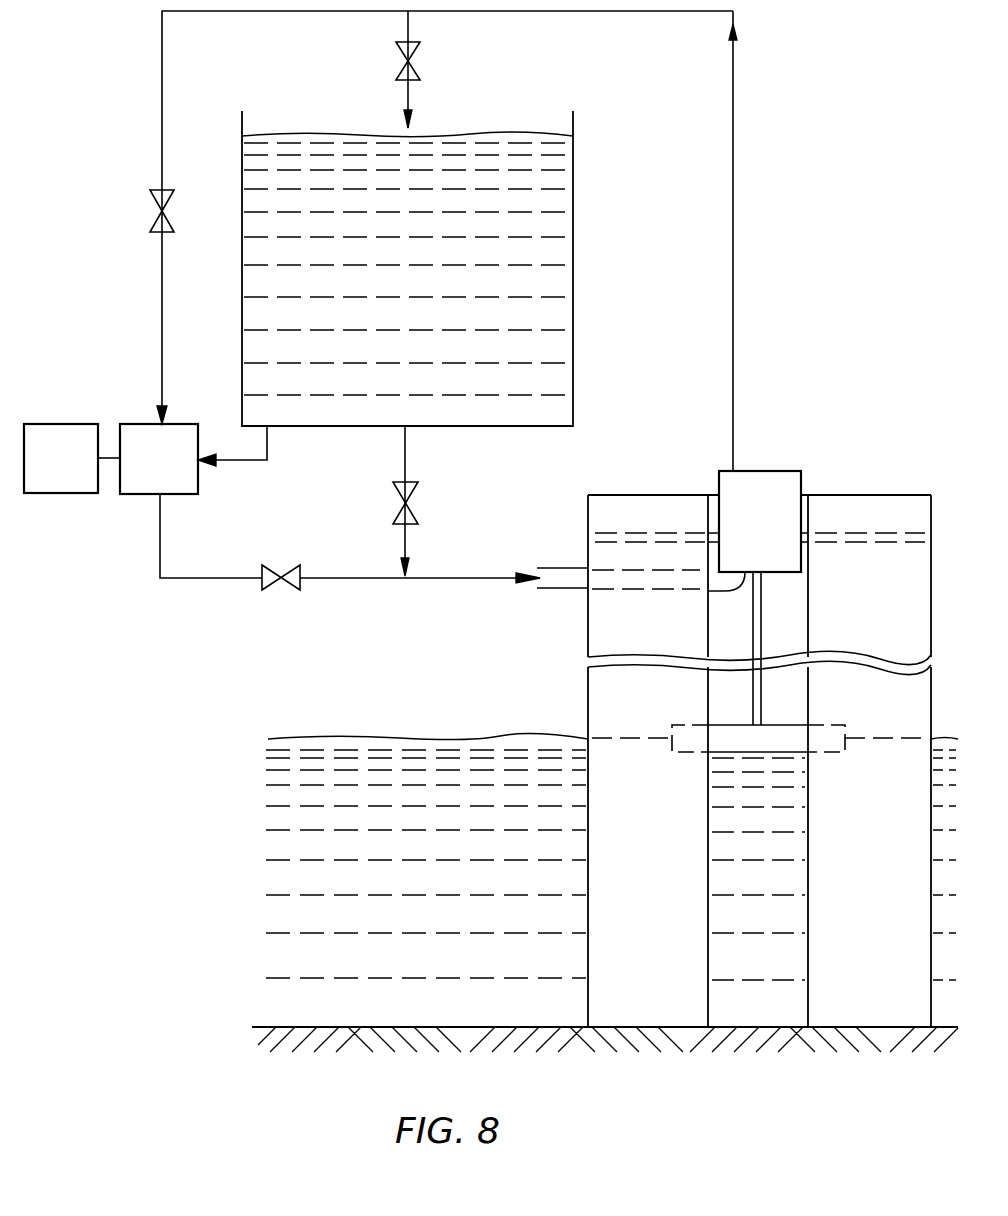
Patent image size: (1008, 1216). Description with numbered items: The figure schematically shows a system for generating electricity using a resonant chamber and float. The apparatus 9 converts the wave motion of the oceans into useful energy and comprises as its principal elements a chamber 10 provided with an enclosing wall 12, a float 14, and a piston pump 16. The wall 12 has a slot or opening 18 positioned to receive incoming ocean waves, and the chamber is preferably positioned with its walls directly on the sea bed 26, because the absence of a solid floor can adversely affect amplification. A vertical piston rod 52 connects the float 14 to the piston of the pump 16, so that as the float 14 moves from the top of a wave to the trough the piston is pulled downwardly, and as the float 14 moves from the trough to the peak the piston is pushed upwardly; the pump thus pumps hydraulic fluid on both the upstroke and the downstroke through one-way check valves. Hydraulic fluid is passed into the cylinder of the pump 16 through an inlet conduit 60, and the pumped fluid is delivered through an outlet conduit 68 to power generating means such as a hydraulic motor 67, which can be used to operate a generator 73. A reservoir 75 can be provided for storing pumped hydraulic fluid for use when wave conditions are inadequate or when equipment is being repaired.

The apparatus 9 is at (878, 462).
The chamber 10 is at (660, 1008).
The enclosing wall 12 is at (586, 682).
The float 14 is at (788, 742).
The piston pump 16 is at (754, 470).
The opening 18 is at (782, 1000).
The sea bed 26 is at (414, 1064).
The piston rod 52 is at (763, 608).
The inlet conduit 60 is at (434, 578).
The hydraulic motor 67 is at (136, 424).
The outlet conduit 68 is at (736, 193).
The generator 73 is at (69, 424).
The reservoir 75 is at (555, 252).